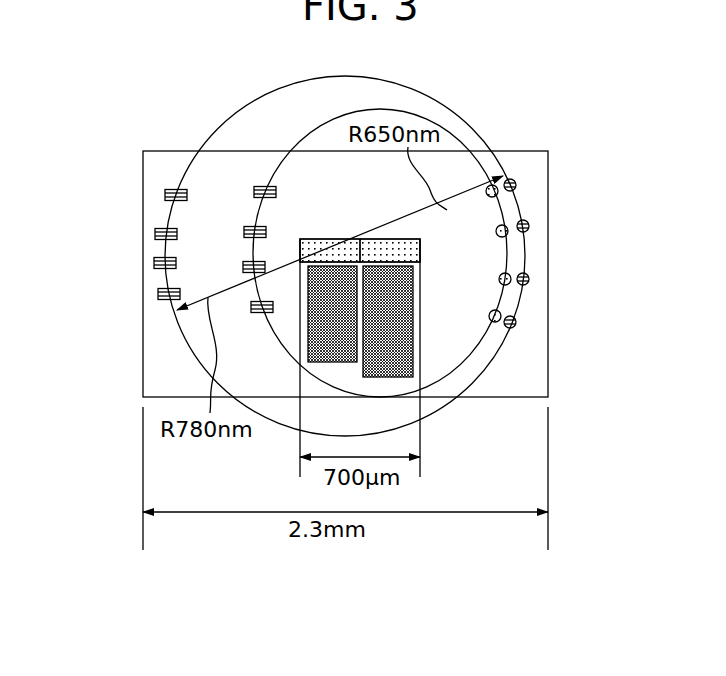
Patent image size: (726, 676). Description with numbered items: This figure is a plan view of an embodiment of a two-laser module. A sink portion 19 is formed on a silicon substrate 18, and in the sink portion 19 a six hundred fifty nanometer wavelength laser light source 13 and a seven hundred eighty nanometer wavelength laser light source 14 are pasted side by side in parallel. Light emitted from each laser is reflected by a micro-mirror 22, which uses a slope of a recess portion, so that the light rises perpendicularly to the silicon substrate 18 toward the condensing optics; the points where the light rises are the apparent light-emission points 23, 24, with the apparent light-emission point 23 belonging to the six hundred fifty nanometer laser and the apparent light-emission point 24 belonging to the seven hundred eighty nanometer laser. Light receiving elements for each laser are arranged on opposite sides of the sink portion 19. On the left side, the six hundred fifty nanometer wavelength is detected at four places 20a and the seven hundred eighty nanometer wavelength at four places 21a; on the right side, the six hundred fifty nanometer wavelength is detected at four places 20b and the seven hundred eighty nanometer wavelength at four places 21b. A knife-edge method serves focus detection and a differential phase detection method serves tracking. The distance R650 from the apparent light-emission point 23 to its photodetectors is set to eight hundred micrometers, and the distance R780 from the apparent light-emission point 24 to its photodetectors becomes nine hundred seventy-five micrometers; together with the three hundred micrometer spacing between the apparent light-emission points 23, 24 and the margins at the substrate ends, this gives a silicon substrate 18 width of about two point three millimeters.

The 650 nm wavelength laser light source 13 is at (405, 328).
The 780 nm wavelength laser light source 14 is at (318, 347).
The silicon substrate 18 is at (545, 367).
The sink portion 19 is at (315, 386).
The 650 nm photodetector portions (left side) 20a is at (218, 190).
The 650 nm photodetector portions (right side) 20b is at (530, 279).
The 780 nm photodetector portions (left side) 21a is at (160, 262).
The 780 nm photodetector portions (right side) 21b is at (507, 227).
The micro-mirror 22 is at (420, 255).
The apparent light-emission point for 650 nm laser light 23 is at (385, 255).
The apparent light-emission point for 780 nm laser light 24 is at (332, 257).